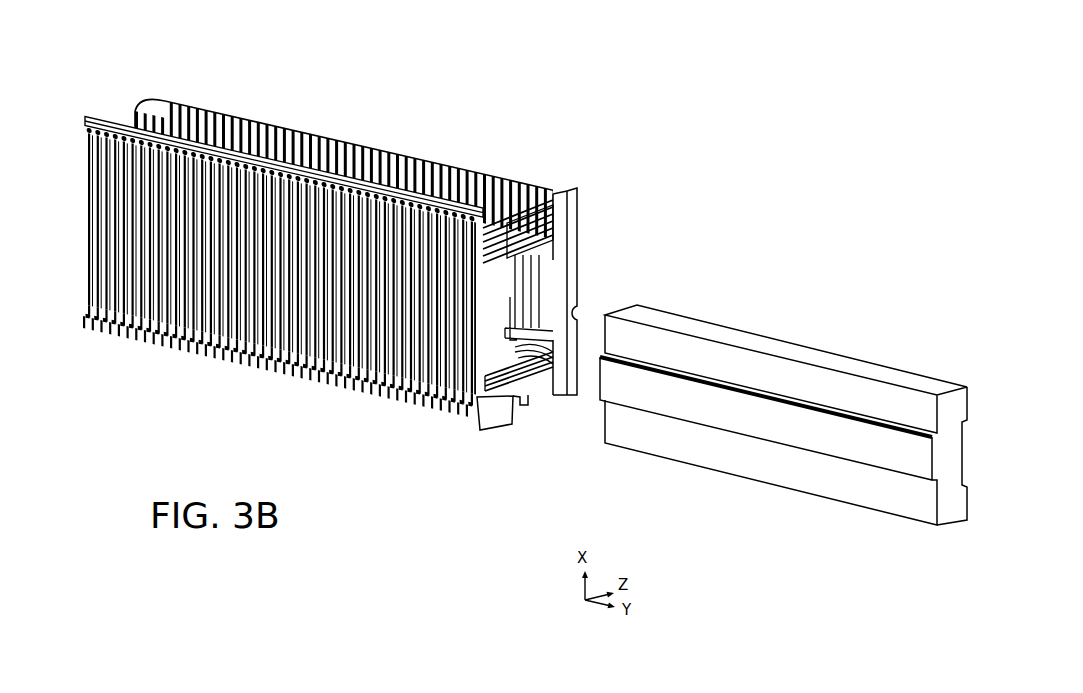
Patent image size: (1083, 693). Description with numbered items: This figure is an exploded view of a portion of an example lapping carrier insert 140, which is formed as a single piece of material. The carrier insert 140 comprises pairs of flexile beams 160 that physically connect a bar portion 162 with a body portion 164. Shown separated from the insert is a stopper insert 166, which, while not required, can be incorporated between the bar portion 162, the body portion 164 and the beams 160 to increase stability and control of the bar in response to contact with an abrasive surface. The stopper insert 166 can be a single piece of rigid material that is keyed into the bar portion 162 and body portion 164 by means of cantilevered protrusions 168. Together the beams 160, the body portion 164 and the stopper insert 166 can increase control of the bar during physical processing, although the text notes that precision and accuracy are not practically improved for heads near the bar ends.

The carrier insert 140 is at (646, 123).
The flexile beams 160 is at (549, 247).
The bar portion 162 is at (492, 426).
The body portion 164 is at (456, 167).
The stopper insert 166 is at (777, 425).
The cantilevered protrusions 168 is at (960, 400).